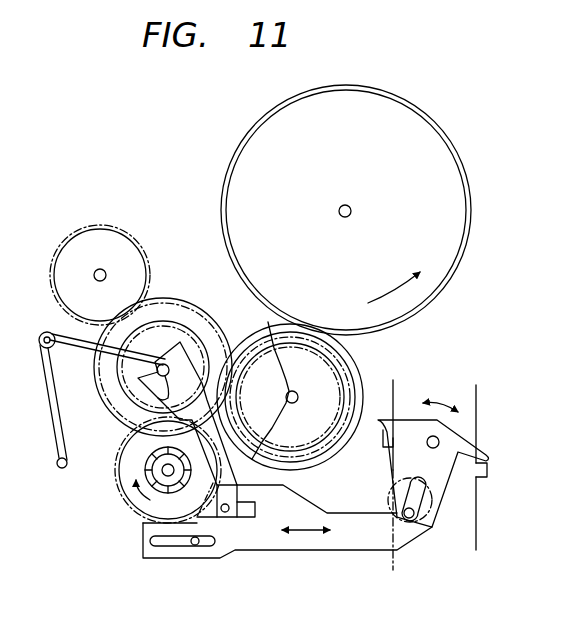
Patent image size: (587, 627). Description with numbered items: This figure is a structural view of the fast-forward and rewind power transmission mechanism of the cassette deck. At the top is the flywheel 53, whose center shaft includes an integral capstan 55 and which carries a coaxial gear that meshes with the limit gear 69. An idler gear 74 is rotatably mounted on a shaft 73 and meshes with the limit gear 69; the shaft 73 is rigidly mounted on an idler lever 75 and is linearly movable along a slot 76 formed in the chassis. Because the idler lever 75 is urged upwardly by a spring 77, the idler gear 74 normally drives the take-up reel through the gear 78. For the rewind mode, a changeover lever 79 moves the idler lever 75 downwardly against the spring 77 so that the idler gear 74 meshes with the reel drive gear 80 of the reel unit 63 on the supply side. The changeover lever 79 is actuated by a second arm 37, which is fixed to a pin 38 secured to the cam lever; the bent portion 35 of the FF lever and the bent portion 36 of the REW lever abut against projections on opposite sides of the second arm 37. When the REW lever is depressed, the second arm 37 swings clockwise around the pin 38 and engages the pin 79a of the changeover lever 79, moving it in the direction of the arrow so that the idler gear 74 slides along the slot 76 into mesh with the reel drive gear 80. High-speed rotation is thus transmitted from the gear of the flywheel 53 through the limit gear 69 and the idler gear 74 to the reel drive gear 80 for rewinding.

The flywheel 53 is at (472, 204).
The capstan 55 is at (348, 217).
The gear 78 is at (76, 236).
The idler gear 74 is at (156, 298).
The slot 76 is at (188, 352).
The limit gear 69 is at (365, 376).
The reel unit 63 is at (112, 490).
The reel drive gear 80 is at (131, 514).
The shaft 73 is at (187, 429).
The idler lever 75 is at (148, 388).
The spring 77 is at (58, 422).
The changeover lever 79 is at (328, 548).
The pin 79a is at (410, 520).
The second arm 37 is at (442, 483).
The pin 38 is at (440, 441).
The bent portion 35 is at (488, 471).
The bent portion 36 is at (386, 436).